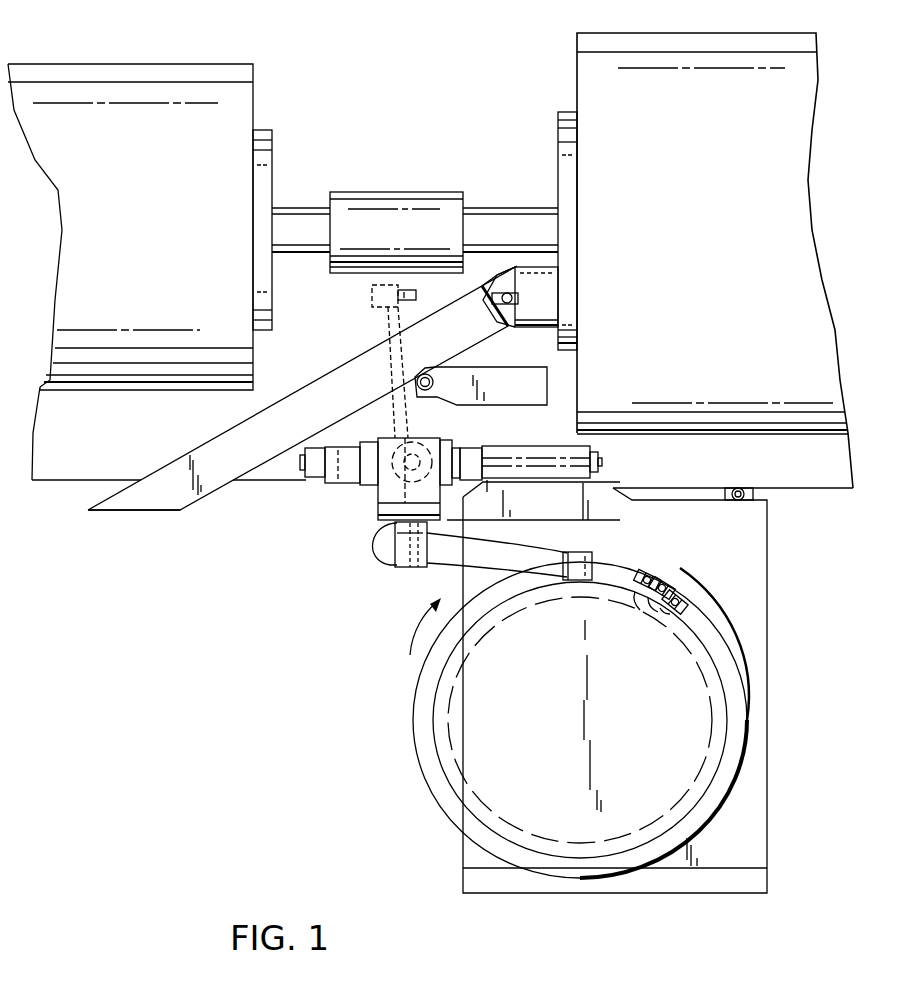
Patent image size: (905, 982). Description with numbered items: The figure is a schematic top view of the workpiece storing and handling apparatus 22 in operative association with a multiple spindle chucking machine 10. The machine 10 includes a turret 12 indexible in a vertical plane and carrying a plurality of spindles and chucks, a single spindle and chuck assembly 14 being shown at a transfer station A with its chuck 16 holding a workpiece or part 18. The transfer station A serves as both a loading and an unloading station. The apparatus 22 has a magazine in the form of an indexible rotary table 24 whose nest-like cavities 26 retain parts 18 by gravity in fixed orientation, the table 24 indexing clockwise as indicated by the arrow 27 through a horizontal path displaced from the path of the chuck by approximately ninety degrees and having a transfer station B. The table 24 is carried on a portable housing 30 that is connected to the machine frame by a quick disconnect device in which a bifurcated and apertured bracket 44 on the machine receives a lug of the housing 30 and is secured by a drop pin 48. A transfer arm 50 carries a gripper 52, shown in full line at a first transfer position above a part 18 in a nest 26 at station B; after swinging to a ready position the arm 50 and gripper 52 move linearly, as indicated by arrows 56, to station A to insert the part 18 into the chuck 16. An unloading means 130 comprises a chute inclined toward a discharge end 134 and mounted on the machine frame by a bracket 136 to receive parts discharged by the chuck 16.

The multiple spindle chucking machine 10 is at (426, 112).
The turret 12 is at (577, 133).
The spindle and chuck assembly 14 is at (547, 288).
The chuck 16 is at (520, 266).
The workpiece or part 18 is at (513, 293).
The workpiece storing and handling apparatus 22 is at (398, 666).
The magazine table 24 is at (733, 729).
The nest-like cavities 26 is at (650, 612).
The arrow indicating table indexing movement 27 is at (426, 630).
The housing 30 is at (670, 893).
The bifurcated and apertured bracket 44 is at (755, 493).
The drop pin 48 is at (739, 488).
The transfer arm 50 is at (533, 568).
The gripper 52 is at (585, 580).
The arrows indicating linear movement 56 is at (450, 296).
The unloading means 130 is at (342, 374).
The discharge end 134 is at (140, 512).
The bracket 136 is at (468, 393).
The transfer station A is at (534, 339).
The transfer station B is at (606, 551).